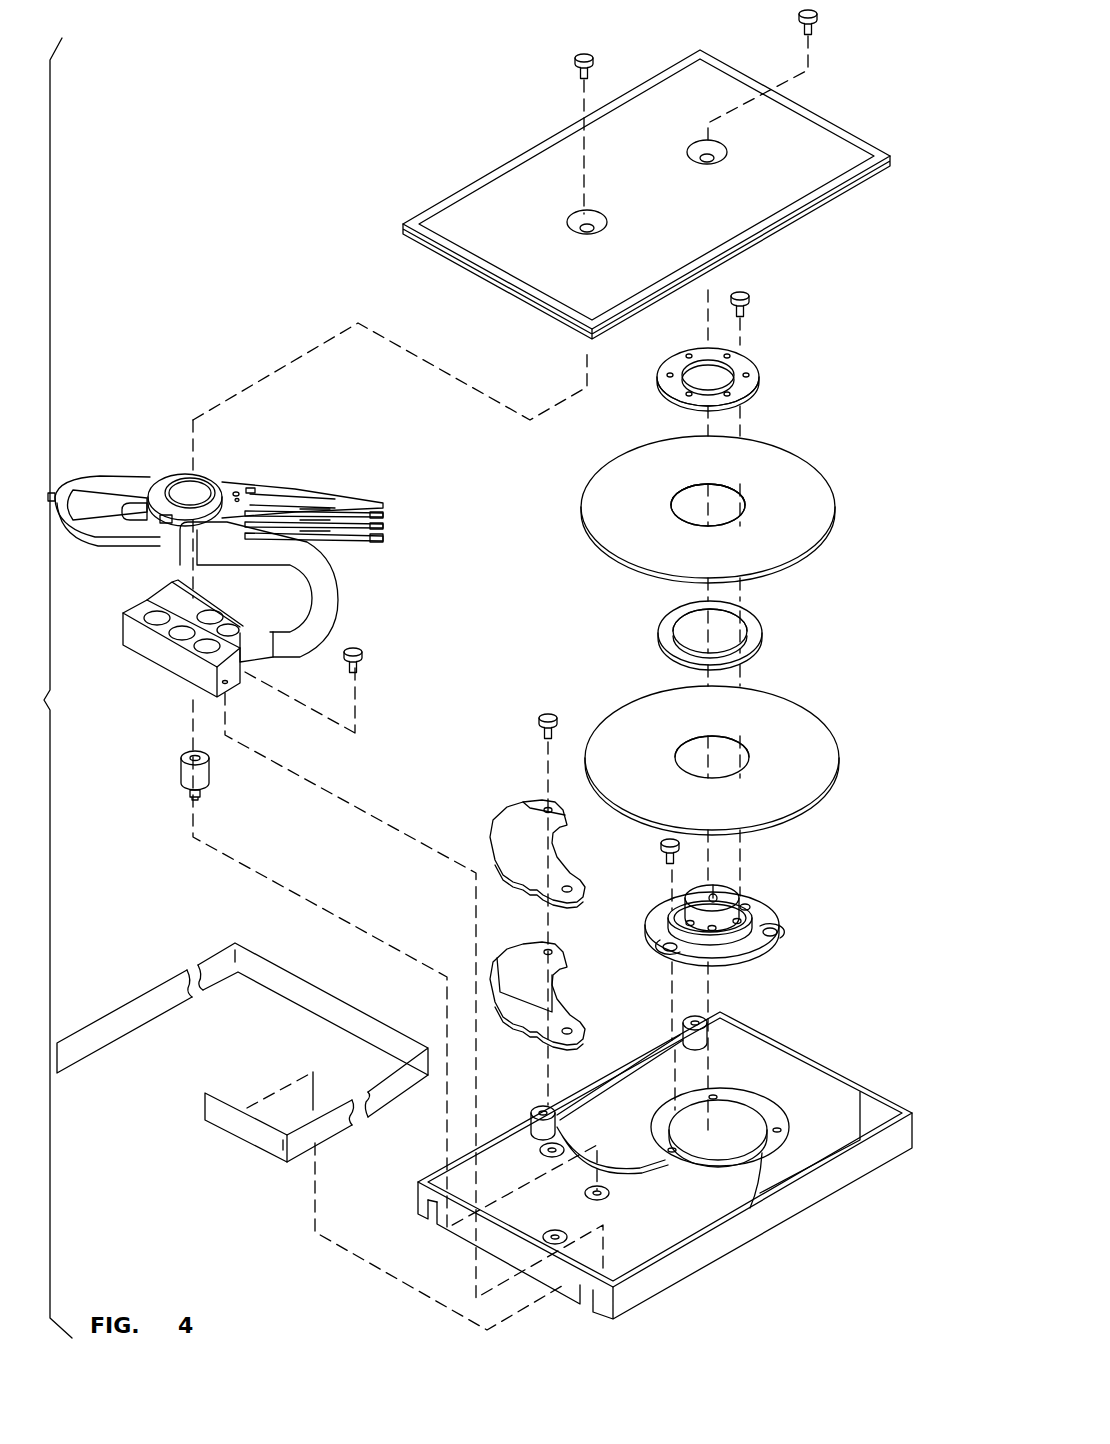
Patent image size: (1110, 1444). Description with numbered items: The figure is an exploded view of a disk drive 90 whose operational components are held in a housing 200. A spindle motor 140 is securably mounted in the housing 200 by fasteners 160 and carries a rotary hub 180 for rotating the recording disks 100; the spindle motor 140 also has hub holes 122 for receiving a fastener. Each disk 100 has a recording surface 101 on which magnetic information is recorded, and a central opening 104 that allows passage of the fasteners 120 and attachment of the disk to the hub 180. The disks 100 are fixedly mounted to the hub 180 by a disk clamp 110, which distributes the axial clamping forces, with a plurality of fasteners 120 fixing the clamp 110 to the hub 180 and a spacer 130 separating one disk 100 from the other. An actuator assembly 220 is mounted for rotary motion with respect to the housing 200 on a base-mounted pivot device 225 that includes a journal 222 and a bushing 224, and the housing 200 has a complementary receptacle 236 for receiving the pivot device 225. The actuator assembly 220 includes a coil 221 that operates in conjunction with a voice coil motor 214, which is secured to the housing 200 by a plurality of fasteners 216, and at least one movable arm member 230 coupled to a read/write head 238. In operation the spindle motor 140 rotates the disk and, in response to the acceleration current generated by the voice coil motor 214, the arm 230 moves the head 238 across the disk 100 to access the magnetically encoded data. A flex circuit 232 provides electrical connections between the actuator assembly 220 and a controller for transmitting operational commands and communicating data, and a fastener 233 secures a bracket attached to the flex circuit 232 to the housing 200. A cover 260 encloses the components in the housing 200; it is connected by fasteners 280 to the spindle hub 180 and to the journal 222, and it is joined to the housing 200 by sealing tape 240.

The disk drive 90 is at (278, 205).
The recording disk 100 is at (585, 512).
The recording surface 101 is at (646, 524).
The central opening 104 is at (722, 514).
The disk clamp 110 is at (752, 388).
The fasteners 120 is at (750, 300).
The hub holes 122 is at (713, 930).
The spacer 130 is at (762, 645).
The spindle motor 140 is at (782, 922).
The fasteners 160 is at (660, 854).
The rotary hub 180 is at (745, 903).
The housing 200 is at (795, 1216).
The voice coil motor 214 is at (568, 984).
The fasteners 216 is at (538, 728).
The actuator assembly 220 is at (150, 470).
The coil 221 is at (90, 546).
The journal 222 is at (190, 794).
The bushing 224 is at (181, 776).
The pivot device 225 is at (170, 752).
The arm member 230 is at (383, 487).
The flex circuit 232 is at (338, 618).
The fastener 233 is at (365, 657).
The receptacle 236 is at (616, 1193).
The read/write head 238 is at (385, 500).
The sealing tape 240 is at (252, 986).
The cover 260 is at (500, 157).
The fasteners 280 is at (575, 62).